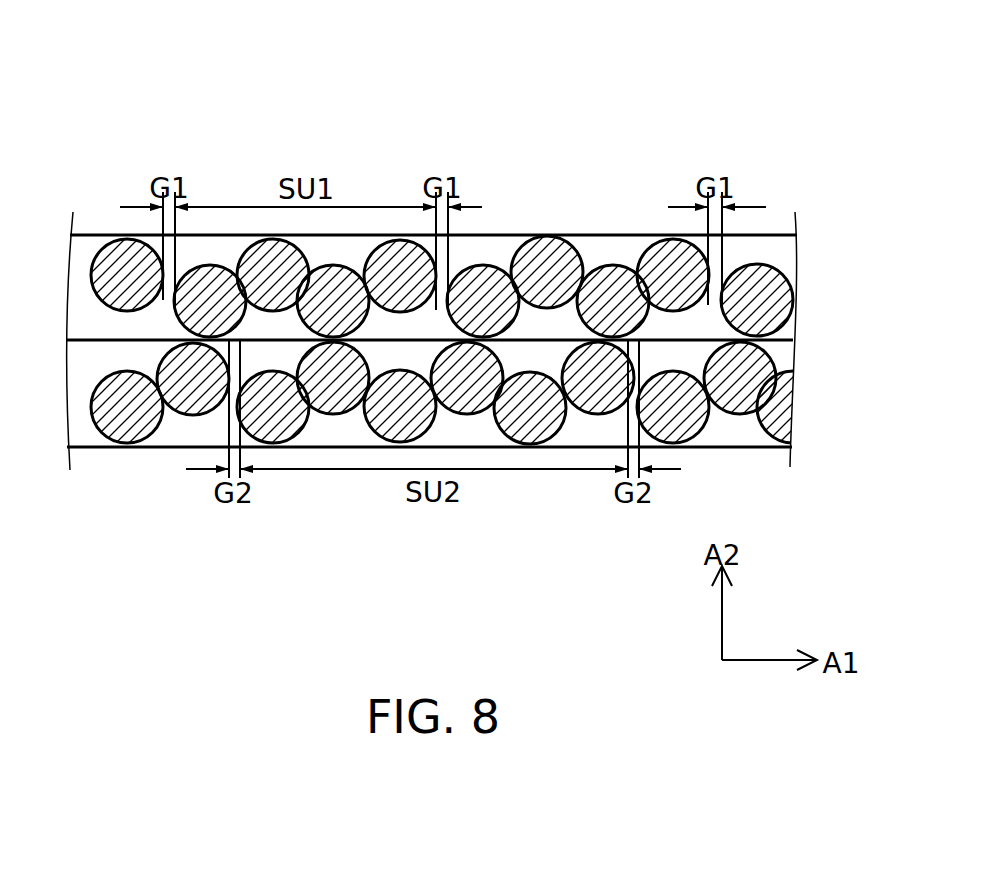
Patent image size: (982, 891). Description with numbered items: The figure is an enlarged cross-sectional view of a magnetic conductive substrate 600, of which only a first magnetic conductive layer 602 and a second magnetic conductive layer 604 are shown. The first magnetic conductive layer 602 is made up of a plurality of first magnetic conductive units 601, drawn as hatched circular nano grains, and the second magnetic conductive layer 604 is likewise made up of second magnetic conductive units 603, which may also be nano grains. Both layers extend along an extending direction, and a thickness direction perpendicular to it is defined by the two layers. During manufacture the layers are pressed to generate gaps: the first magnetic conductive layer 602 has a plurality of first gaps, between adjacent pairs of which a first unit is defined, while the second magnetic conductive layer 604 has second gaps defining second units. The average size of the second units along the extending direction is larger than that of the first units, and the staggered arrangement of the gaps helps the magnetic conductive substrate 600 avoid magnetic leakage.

The magnetic conductive substrate 600 is at (152, 128).
The first magnetic conductive unit 601 is at (538, 257).
The first magnetic conductive layer 602 is at (777, 252).
The second magnetic conductive unit 603 is at (743, 357).
The second magnetic conductive layer 604 is at (740, 430).